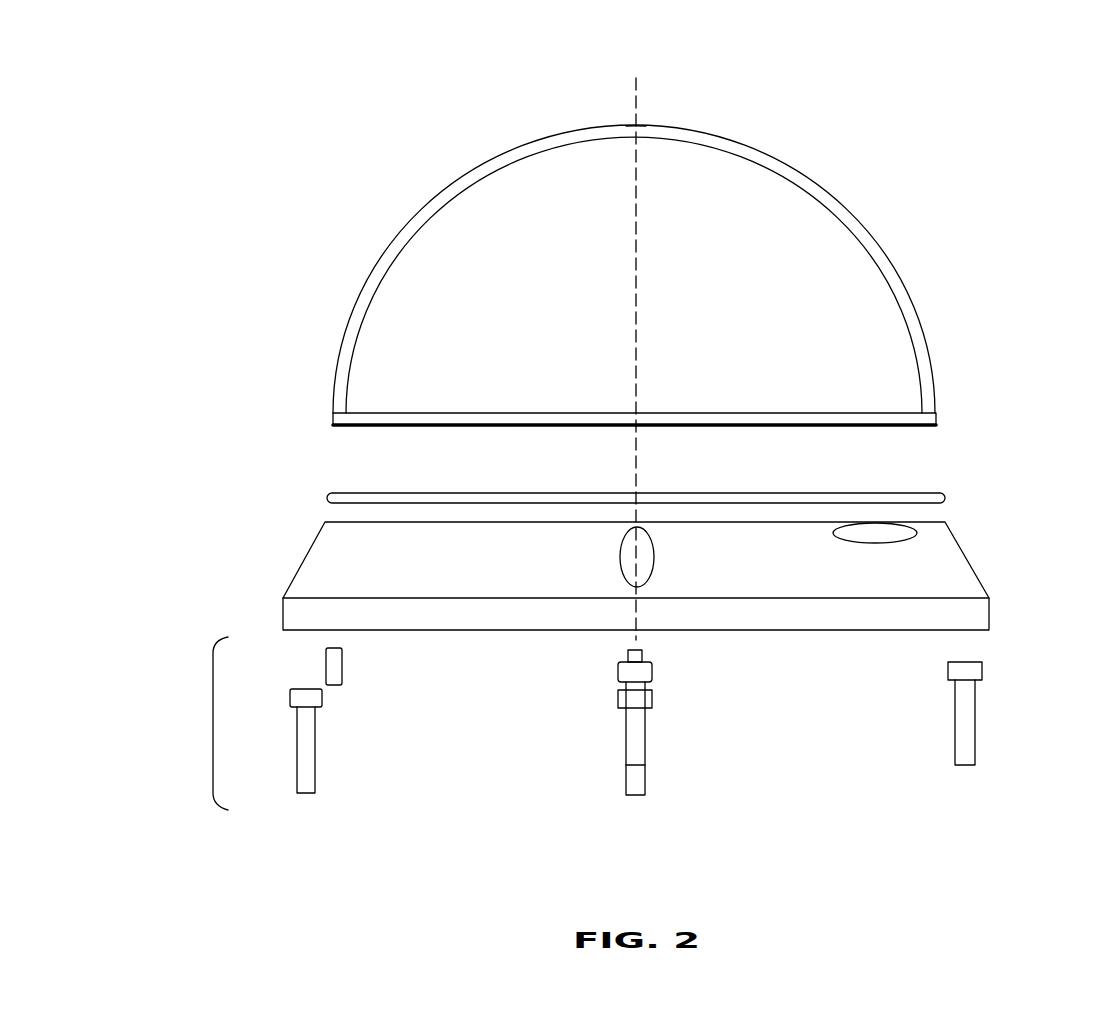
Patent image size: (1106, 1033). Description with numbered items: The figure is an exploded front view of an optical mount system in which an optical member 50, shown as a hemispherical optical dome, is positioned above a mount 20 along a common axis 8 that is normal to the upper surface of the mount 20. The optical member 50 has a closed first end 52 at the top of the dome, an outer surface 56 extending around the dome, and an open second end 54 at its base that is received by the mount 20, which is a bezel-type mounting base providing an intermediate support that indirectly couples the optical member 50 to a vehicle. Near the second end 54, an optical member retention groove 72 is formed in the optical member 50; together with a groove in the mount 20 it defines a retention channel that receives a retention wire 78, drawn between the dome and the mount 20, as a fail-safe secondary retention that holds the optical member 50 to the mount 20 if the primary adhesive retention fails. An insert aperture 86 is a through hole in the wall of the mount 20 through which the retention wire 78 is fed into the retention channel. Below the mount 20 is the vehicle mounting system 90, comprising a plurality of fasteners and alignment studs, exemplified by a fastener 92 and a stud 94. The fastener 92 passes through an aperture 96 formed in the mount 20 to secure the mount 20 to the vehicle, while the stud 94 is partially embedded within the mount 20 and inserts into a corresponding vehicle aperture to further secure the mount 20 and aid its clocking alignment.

The axis 8 is at (640, 102).
The optical member 50 is at (448, 188).
The first end 52 is at (618, 126).
The outer surface 56 is at (920, 327).
The optical member retention groove 72 is at (927, 420).
The second end 54 is at (885, 427).
The retention wire 78 is at (338, 493).
The mount 20 is at (300, 563).
The aperture 96 is at (652, 555).
The insert aperture 86 is at (903, 540).
The vehicle mounting system 90 is at (207, 723).
The fastener 92 is at (310, 748).
The stud 94 is at (337, 672).